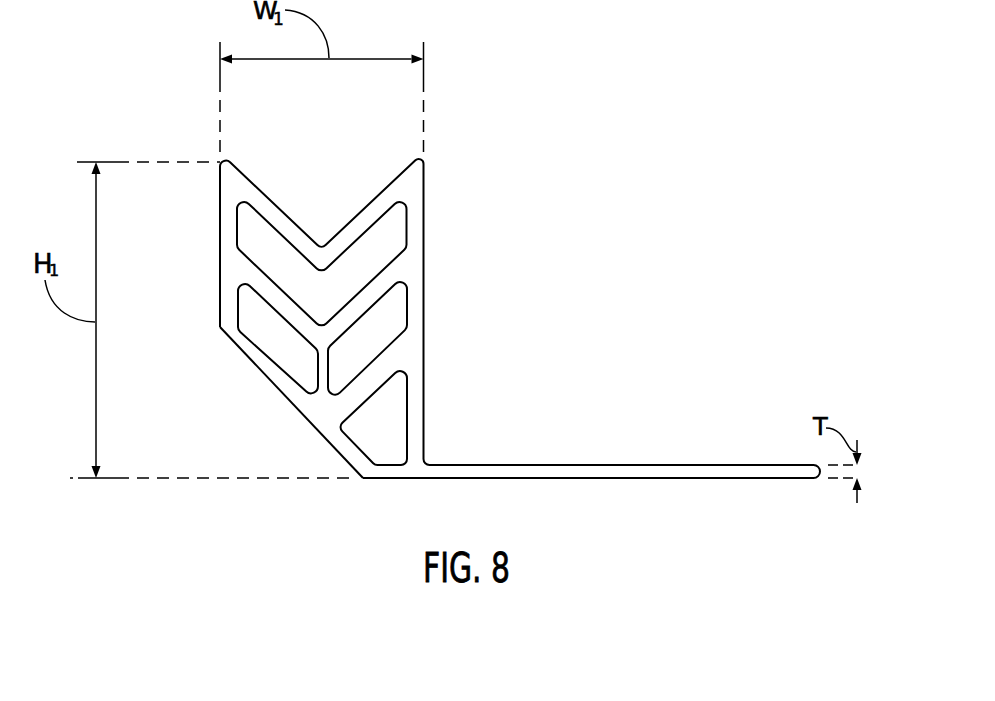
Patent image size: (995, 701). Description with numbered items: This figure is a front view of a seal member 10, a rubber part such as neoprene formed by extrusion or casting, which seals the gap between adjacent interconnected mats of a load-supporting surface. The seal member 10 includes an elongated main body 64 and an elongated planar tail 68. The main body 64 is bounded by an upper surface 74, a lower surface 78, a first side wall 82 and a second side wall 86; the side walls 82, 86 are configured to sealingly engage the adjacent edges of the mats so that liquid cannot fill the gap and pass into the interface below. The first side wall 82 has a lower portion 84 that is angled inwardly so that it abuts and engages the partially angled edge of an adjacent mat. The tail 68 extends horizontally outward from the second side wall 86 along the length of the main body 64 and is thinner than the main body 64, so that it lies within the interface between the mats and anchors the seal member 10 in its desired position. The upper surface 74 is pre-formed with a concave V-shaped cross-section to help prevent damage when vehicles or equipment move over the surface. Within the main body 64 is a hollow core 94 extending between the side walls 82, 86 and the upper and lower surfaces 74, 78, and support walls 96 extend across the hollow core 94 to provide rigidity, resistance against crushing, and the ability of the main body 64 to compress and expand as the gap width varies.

The seal member 10 is at (547, 224).
The main body 64 is at (436, 187).
The tail 68 is at (636, 465).
The upper surface 74 is at (368, 203).
The lower surface 78 is at (381, 493).
The first side wall 82 is at (220, 238).
The lower portion 84 is at (246, 417).
The second side wall 86 is at (424, 320).
The hollow core 94 is at (380, 240).
The support walls 96 is at (268, 312).